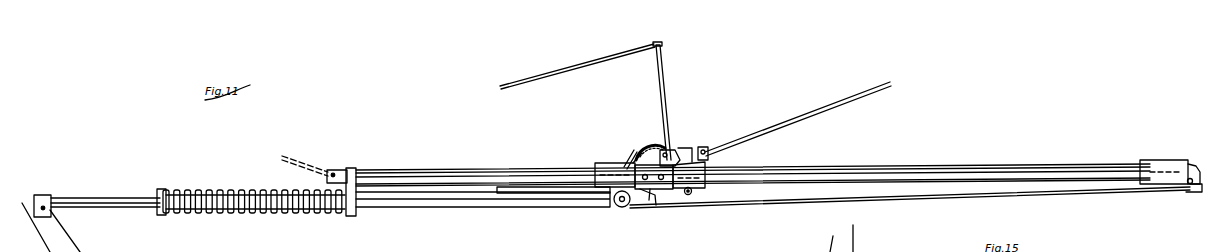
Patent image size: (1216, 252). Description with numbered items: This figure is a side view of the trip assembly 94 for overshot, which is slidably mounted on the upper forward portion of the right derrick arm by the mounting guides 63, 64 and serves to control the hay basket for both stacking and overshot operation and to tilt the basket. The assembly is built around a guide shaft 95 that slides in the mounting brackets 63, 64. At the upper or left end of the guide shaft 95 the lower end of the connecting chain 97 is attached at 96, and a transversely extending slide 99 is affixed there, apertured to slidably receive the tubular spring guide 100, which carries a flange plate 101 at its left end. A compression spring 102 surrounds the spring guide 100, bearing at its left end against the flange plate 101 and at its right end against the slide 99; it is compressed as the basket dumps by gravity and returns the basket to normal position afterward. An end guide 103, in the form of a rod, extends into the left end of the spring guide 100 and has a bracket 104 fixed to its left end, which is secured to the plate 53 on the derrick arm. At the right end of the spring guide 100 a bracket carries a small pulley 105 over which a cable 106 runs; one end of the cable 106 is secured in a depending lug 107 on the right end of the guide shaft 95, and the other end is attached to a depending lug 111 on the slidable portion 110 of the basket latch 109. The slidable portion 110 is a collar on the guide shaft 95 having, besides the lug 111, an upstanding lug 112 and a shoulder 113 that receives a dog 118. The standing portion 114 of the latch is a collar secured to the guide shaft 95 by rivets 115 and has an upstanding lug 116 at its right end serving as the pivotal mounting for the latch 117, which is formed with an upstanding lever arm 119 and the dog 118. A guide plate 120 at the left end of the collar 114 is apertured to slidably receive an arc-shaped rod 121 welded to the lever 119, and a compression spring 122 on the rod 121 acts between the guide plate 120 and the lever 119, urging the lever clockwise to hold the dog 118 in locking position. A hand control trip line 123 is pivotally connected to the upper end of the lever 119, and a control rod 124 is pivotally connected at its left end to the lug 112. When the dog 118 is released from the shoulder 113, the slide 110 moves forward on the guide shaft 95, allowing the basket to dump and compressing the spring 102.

The plate 53 is at (58, 236).
The mounting guide 63 is at (1152, 160).
The mounting guide 64 is at (595, 170).
The trip assembly 94 is at (830, 165).
The guide shaft 95 is at (950, 172).
The connection point 96 is at (335, 170).
The connecting chain 97 is at (310, 160).
The slide 99 is at (352, 217).
The spring guide 100 is at (438, 208).
The flange plate 101 is at (160, 215).
The compression spring 102 is at (268, 213).
The end guide 103 is at (98, 198).
The bracket 104 is at (38, 196).
The small pulley 105 is at (622, 206).
The cable 106 is at (792, 208).
The depending lug 107 is at (1192, 192).
The basket latch 109 is at (676, 140).
The slidable portion 110 is at (700, 172).
The depending lug 111 is at (690, 197).
The upstanding lug 112 is at (704, 150).
The shoulder 113 is at (668, 190).
The standing portion 114 is at (652, 200).
The rivets 115 is at (655, 192).
The upstanding lug 116 is at (652, 148).
The latch 117 is at (667, 60).
The dog 118 is at (686, 145).
The lever arm 119 is at (660, 42).
The guide plate 120 is at (640, 158).
The arc-shaped rod 121 is at (628, 162).
The compression spring 122 is at (645, 150).
The hand control trip line 123 is at (548, 72).
The control rod 124 is at (832, 102).